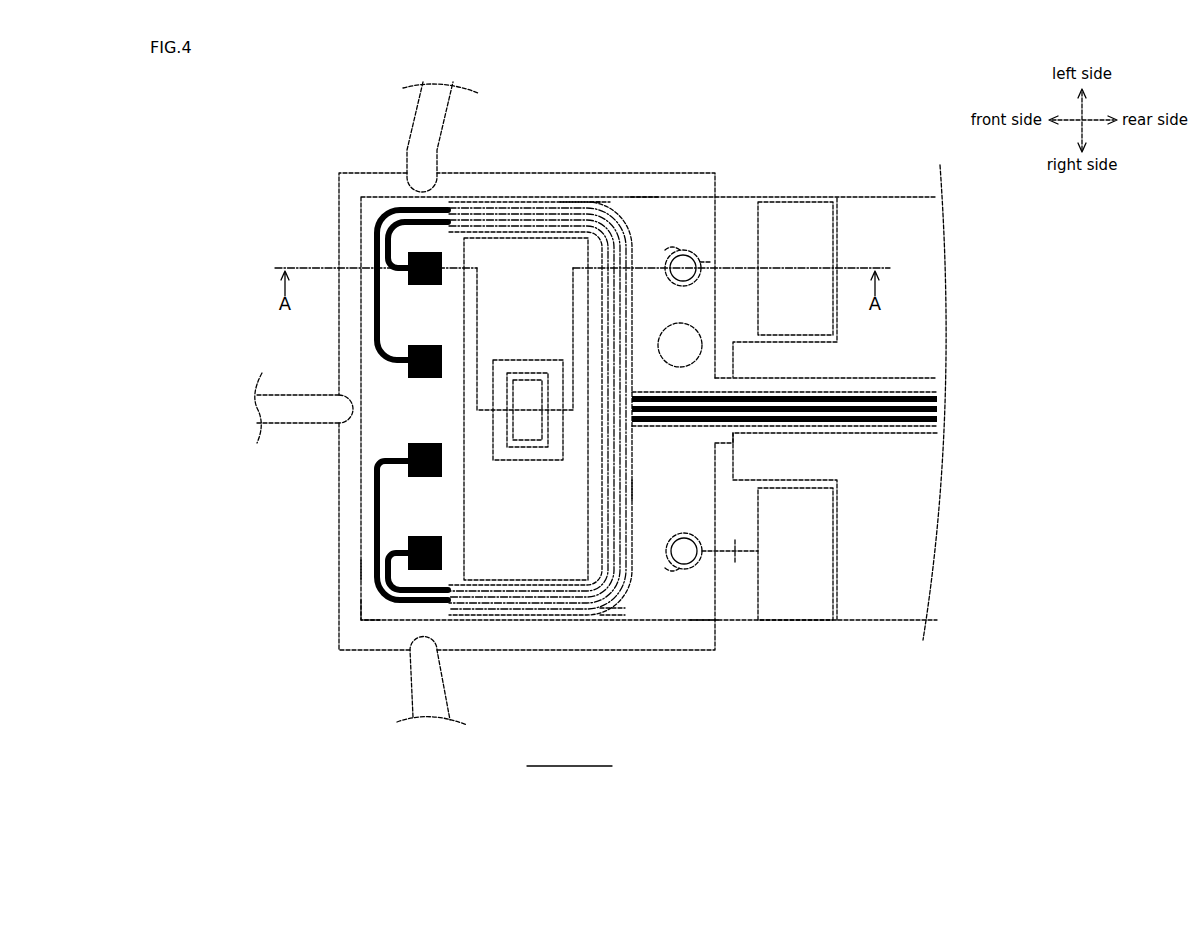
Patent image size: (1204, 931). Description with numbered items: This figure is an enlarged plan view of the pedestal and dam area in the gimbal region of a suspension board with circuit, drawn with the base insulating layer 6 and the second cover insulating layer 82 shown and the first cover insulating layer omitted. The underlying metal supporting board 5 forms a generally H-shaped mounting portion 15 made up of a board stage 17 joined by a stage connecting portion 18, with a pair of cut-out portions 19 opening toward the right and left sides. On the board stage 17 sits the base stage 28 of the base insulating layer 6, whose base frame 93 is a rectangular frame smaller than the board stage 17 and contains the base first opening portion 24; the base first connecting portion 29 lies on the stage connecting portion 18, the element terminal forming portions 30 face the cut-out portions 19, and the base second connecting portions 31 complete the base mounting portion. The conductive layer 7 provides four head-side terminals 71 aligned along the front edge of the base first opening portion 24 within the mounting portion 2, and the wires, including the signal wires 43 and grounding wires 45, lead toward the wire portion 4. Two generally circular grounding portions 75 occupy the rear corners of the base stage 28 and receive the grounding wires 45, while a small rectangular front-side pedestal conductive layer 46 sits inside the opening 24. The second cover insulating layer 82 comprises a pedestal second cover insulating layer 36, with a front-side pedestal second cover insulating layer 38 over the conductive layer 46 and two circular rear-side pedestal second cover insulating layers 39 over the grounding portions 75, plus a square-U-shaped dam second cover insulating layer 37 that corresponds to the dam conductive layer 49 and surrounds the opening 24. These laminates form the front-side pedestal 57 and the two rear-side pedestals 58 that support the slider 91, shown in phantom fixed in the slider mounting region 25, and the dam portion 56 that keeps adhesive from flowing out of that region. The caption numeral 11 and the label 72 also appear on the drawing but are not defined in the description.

The mounting portion 2 is at (569, 756).
The wire portion 4 is at (600, 200).
The metal supporting board 5 is at (349, 607).
The base insulating layer 6 is at (353, 623).
The conductive layer 7 is at (953, 410).
The actuator 11 is at (569, 756).
The mounting portion 15 is at (569, 756).
The board stage 17 is at (337, 362).
The stage connecting portion 18 is at (903, 378).
The cut-out portions 19 is at (918, 428).
The base first opening portion 24 is at (503, 580).
The slider mounting region 25 is at (705, 622).
The base stage 28 is at (359, 570).
The base first connecting portion 29 is at (867, 437).
The element terminal forming portions 30 is at (838, 212).
The base second connecting portions 31 is at (443, 85).
The pedestal second cover insulating layer 36 is at (683, 243).
The dam second cover insulating layer 37 is at (633, 356).
The front-side pedestal second cover insulating layer 38 is at (537, 447).
The rear-side pedestal second cover insulating layers 39 is at (673, 285).
The signal wires 43 is at (287, 690).
The grounding wires 45 is at (785, 668).
The front-side pedestal conductive layer 46 is at (509, 368).
The dam conductive layer 49 is at (635, 490).
The dam portion 56 is at (616, 620).
The front-side pedestal 57 is at (516, 472).
The rear-side pedestals 58 is at (757, 708).
The head-side terminals 71 is at (403, 277).
The mounting portion 72 is at (808, 198).
The grounding portions 75 is at (688, 243).
The second cover insulating layer 82 is at (398, 614).
The slider 91 is at (872, 198).
The base frame 93 is at (642, 197).